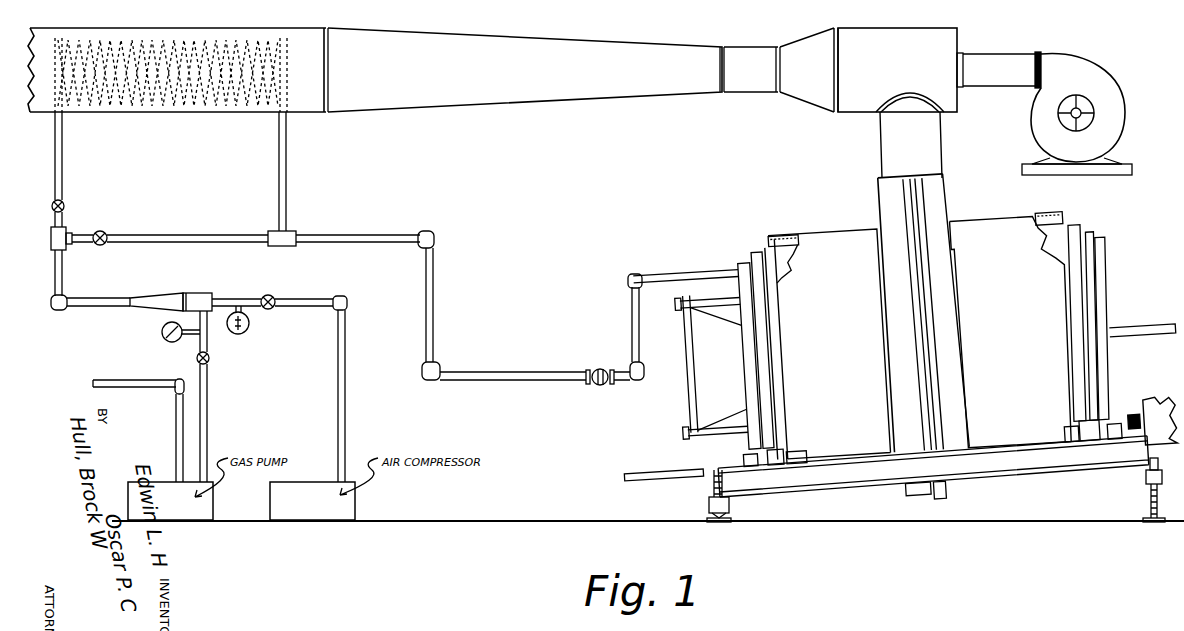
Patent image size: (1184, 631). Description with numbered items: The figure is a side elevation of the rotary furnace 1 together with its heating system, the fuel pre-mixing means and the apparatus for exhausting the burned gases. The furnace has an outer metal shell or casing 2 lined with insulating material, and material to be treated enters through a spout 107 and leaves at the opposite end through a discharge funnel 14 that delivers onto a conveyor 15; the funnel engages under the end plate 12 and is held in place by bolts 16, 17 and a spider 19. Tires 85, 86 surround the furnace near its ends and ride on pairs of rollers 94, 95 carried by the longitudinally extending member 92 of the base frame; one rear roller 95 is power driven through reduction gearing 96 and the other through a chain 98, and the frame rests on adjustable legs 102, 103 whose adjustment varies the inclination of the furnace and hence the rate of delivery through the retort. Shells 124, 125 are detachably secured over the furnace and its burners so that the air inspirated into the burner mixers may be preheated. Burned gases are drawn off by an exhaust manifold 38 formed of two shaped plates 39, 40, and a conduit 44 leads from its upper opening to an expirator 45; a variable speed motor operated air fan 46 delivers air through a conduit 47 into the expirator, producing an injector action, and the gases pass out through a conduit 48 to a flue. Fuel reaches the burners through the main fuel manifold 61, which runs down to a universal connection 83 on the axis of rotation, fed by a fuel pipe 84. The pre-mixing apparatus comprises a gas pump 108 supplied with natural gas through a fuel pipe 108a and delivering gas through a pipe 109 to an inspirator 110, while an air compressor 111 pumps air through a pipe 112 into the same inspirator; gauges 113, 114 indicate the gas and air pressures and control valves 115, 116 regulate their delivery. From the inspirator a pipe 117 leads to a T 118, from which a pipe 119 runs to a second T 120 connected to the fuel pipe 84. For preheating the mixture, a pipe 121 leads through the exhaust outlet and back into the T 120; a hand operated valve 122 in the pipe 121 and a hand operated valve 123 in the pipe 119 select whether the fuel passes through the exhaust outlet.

The furnace 1 is at (1123, 266).
The outer metal shell or casing 2 is at (798, 268).
The end plate 12 is at (762, 396).
The discharge funnel 14 is at (706, 375).
The conveyor 15 is at (652, 457).
The bolt 16 is at (724, 424).
The bolt 17 is at (716, 288).
The spider 19 is at (693, 341).
The exhaust manifold 38 is at (887, 316).
The plate 39 is at (893, 408).
The plate 40 is at (964, 313).
The conduit 44 is at (933, 138).
The expirator 45 is at (900, 32).
The variable speed motor operated air fan 46 is at (1118, 104).
The conduit 47 is at (999, 60).
The conduit 48 is at (572, 45).
The main fuel manifold 61 is at (631, 329).
The universal connection 83 is at (600, 386).
The fuel pipe 84 is at (345, 235).
The tire 85 is at (775, 341).
The tire 86 is at (1085, 323).
The longitudinally extending member 92 is at (882, 480).
The roller 94 is at (778, 458).
The roller 95 is at (1095, 442).
The reduction gearing 96 is at (1162, 414).
The chain 98 is at (1134, 427).
The adjustable leg 102 is at (712, 491).
The adjustable leg 103 is at (1148, 504).
The spout 107 is at (1146, 341).
The gas pump 108 is at (152, 486).
The fuel pipe 108a is at (108, 382).
The pipe 109 is at (207, 412).
The inspirator 110 is at (204, 288).
The air compressor 111 is at (337, 507).
The pipe 112 is at (346, 411).
The gauge 113 is at (162, 334).
The gauge 114 is at (249, 327).
The control valve 115 is at (210, 360).
The control valve 116 is at (285, 301).
The pipe 117 is at (64, 281).
The T 118 is at (51, 245).
The pipe 119 is at (152, 234).
The T 120 is at (279, 247).
The pipe 121 is at (64, 147).
The hand operated valve 122 is at (66, 204).
The hand operated valve 123 is at (104, 232).
The shell 124 is at (838, 238).
The shell 125 is at (1010, 225).